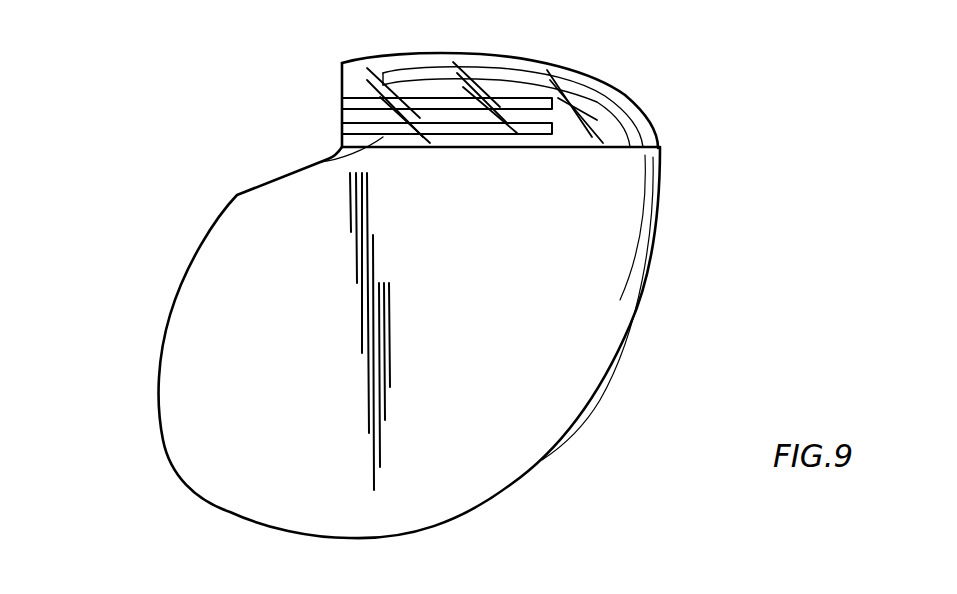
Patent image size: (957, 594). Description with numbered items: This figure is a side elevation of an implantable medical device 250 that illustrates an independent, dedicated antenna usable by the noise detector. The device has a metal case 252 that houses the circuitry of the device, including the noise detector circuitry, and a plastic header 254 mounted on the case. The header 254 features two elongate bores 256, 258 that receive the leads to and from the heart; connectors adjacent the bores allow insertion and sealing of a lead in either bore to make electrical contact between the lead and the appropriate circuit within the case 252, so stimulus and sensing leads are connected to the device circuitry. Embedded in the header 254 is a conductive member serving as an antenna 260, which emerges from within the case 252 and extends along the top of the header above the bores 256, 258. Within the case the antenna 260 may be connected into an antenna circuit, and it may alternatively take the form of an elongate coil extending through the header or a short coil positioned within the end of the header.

The implantable medical device 250 is at (404, 287).
The metal case 252 is at (650, 265).
The plastic header 254 is at (647, 130).
The elongate bore 256 is at (383, 107).
The elongate bore 258 is at (320, 162).
The antenna 260 is at (567, 87).